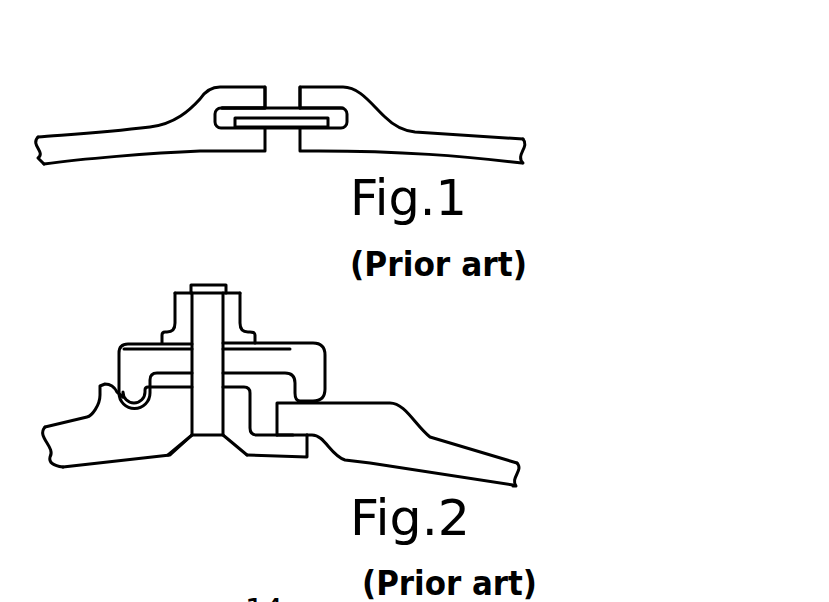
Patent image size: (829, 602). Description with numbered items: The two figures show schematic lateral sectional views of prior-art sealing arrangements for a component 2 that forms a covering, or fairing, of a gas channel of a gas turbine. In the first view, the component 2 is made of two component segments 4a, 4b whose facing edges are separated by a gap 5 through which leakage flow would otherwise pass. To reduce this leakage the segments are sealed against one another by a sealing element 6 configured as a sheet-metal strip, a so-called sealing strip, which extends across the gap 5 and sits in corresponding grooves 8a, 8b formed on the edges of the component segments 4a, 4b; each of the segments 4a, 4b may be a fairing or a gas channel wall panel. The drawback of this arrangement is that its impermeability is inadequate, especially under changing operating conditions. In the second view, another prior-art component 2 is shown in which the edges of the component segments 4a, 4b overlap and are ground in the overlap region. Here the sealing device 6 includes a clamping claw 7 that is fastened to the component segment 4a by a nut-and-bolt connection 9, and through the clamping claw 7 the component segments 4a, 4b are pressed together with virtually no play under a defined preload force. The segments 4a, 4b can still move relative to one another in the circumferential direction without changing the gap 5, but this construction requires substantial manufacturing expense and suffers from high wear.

In FIG. 1, the component 2 is at (280, 85).
In FIG. 2, the component 2 is at (279, 402).
In FIG. 1, the component segment 4a is at (141, 137).
In FIG. 2, the component segment 4a is at (82, 433).
In FIG. 1, the component segment 4b is at (463, 134).
In FIG. 2, the component segment 4b is at (461, 453).
In FIG. 1, the gap 5 is at (272, 72).
In FIG. 2, the gap 5 is at (293, 449).
In FIG. 1, the sealing element 6 is at (280, 118).
In FIG. 2, the sealing element 6 is at (203, 356).
In FIG. 2, the clamping claw 7 is at (322, 371).
In FIG. 1, the groove 8a is at (224, 94).
In FIG. 1, the groove 8b is at (329, 95).
In FIG. 2, the nut-and-bolt connection 9 is at (252, 278).